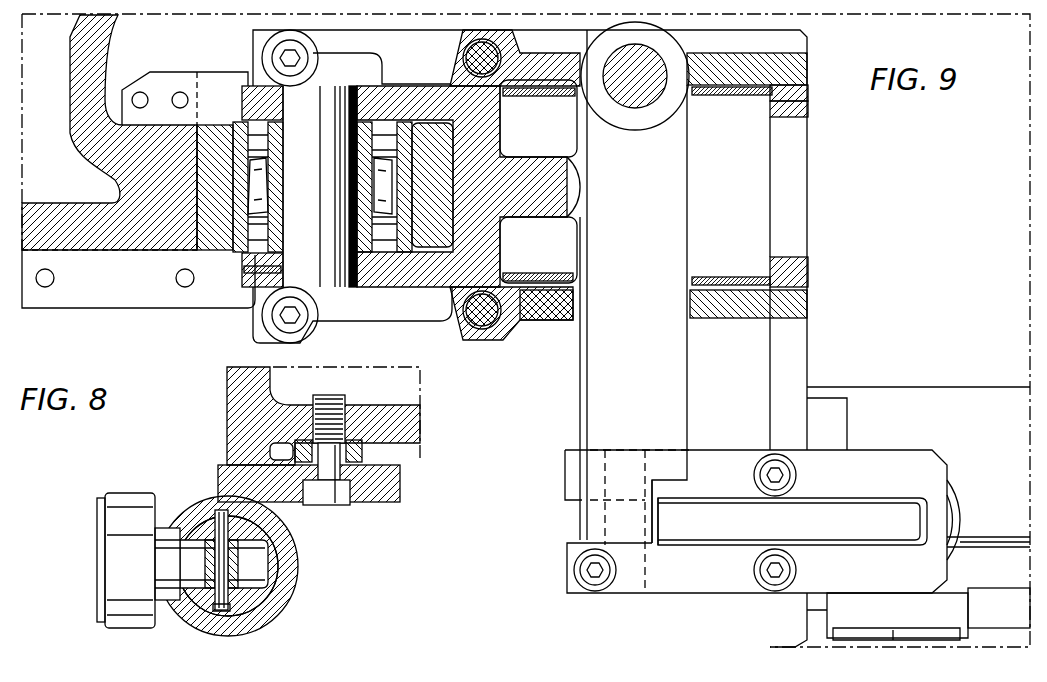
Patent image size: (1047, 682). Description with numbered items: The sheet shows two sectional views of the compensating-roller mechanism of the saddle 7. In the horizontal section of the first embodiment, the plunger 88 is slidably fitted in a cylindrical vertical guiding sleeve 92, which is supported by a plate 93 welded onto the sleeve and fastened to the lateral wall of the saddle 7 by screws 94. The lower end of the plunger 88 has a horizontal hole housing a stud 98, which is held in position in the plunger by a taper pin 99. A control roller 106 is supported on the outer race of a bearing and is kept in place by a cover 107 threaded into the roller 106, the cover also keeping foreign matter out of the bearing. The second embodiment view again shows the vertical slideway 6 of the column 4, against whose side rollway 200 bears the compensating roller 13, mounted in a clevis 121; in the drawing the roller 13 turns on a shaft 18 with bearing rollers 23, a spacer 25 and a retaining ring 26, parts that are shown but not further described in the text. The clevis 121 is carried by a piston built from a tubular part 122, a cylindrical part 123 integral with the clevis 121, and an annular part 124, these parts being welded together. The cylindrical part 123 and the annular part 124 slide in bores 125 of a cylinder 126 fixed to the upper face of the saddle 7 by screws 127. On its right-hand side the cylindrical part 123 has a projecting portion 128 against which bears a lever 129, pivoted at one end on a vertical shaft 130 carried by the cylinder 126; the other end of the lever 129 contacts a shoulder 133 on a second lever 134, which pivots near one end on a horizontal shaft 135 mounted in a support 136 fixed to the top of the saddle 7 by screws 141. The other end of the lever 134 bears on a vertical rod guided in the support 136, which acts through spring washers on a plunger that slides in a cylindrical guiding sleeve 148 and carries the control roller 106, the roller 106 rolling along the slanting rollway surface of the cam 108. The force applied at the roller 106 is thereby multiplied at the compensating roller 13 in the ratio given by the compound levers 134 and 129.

In FIG. 9, the column 4 is at (90, 38).
In FIG. 9, the vertical slideway 6 is at (135, 237).
In FIG. 8, the saddle 7 is at (410, 428).
In FIG. 9, the compensating roller 13 is at (182, 248).
In FIG. 9, the shaft 18 is at (335, 277).
In FIG. 9, the roller bearing 23 is at (268, 203).
In FIG. 9, the spacer 25 is at (233, 137).
In FIG. 9, the retaining ring 26 is at (232, 250).
In FIG. 8, the plunger 88 is at (255, 595).
In FIG. 8, the guiding sleeve 92 is at (250, 623).
In FIG. 8, the plate 93 is at (390, 487).
In FIG. 8, the screws 94 is at (335, 503).
In FIG. 8, the stud 98 is at (167, 590).
In FIG. 8, the taper pin 99 is at (235, 600).
In FIG. 9, the control roller 106 is at (957, 617).
In FIG. 8, the control roller 106 is at (125, 507).
In FIG. 9, the cover 107 is at (858, 643).
In FIG. 8, the cover 107 is at (98, 541).
In FIG. 9, the cam 108 is at (990, 600).
In FIG. 9, the clevis 121 is at (378, 98).
In FIG. 9, the tubular part 122 is at (555, 270).
In FIG. 9, the cylindrical part 123 is at (483, 148).
In FIG. 9, the annular part 124 is at (272, 137).
In FIG. 9, the bores 125 is at (473, 96).
In FIG. 9, the cylinder 126 is at (724, 66).
In FIG. 9, the screws 127 is at (285, 60).
In FIG. 9, the projecting portion 128 is at (547, 208).
In FIG. 9, the lever 129 is at (665, 155).
In FIG. 9, the vertical shaft 130 is at (625, 66).
In FIG. 9, the shoulder 133 is at (657, 517).
In FIG. 9, the second lever 134 is at (720, 528).
In FIG. 9, the horizontal shaft 135 is at (645, 575).
In FIG. 9, the support 136 is at (883, 460).
In FIG. 9, the screws 141 is at (772, 473).
In FIG. 9, the guiding sleeve 148 is at (957, 498).
In FIG. 9, the side rollway 200 is at (200, 143).